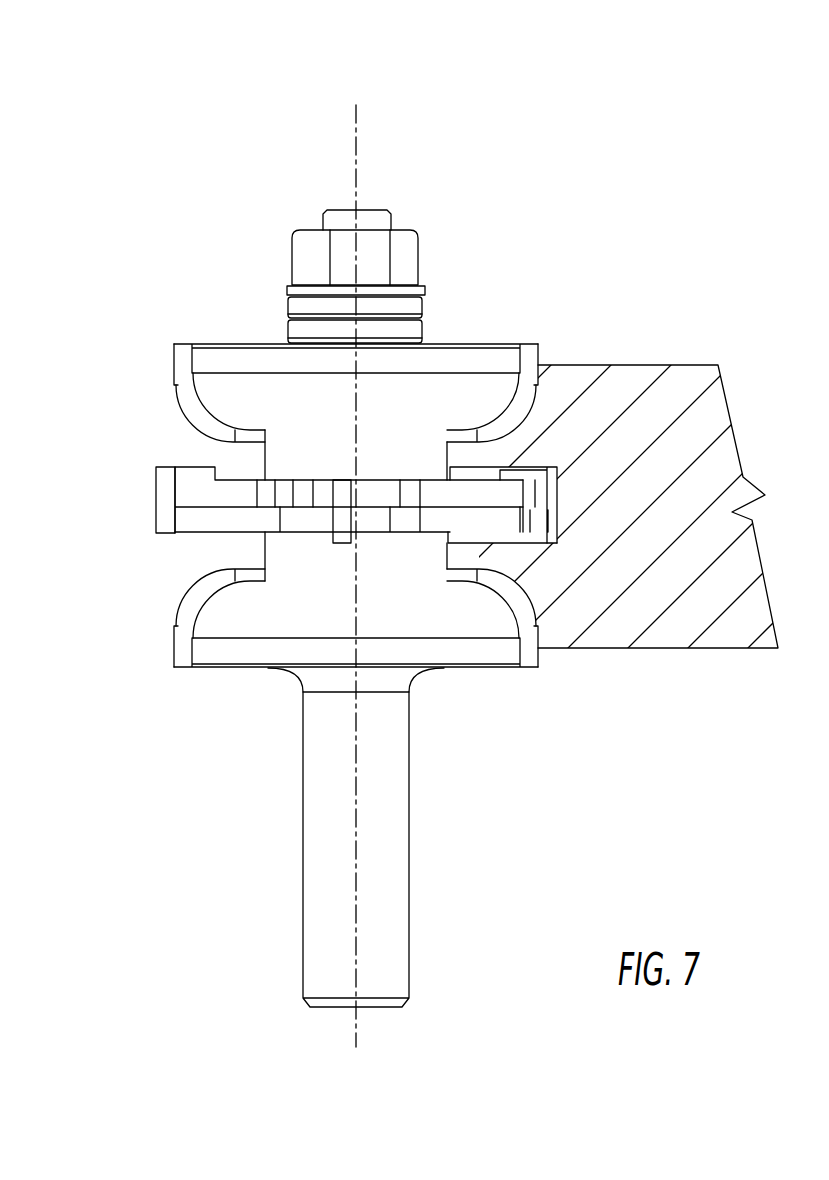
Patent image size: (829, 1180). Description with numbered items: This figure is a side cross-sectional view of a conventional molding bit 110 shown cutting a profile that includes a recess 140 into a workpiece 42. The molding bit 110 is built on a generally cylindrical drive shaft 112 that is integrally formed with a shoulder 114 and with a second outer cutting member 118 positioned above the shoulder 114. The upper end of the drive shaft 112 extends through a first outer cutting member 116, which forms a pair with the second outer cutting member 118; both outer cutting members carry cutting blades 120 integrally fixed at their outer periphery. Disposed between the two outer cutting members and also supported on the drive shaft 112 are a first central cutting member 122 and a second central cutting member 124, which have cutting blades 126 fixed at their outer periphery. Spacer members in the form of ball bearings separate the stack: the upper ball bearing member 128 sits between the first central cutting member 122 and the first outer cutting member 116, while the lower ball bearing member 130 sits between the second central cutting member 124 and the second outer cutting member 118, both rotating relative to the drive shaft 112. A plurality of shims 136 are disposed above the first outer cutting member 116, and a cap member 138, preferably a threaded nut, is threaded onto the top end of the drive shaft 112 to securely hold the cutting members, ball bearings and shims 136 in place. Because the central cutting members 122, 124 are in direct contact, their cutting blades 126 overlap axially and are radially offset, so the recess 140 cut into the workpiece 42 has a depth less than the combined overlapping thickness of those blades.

The workpiece 42 is at (655, 415).
The molding bit 110 is at (183, 162).
The drive shaft 112 is at (315, 765).
The shoulder 114 is at (402, 678).
The first outer cutting member 116 is at (433, 549).
The second outer cutting member 118 is at (250, 628).
The cutting blades 120 is at (525, 360).
The first central cutting member 122 is at (232, 493).
The second central cutting member 124 is at (197, 522).
The cutting blades 126 is at (163, 485).
The upper ball bearing member 128 is at (297, 450).
The lower ball bearing member 130 is at (407, 557).
The shims 136 is at (288, 330).
The cap member 138 is at (405, 258).
The recess 140 is at (553, 513).